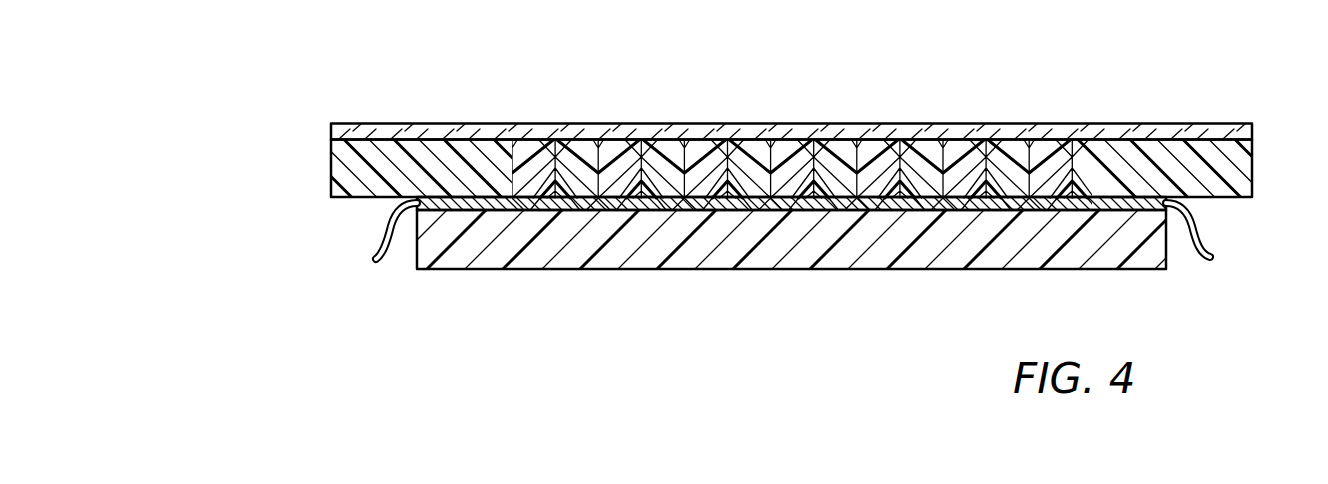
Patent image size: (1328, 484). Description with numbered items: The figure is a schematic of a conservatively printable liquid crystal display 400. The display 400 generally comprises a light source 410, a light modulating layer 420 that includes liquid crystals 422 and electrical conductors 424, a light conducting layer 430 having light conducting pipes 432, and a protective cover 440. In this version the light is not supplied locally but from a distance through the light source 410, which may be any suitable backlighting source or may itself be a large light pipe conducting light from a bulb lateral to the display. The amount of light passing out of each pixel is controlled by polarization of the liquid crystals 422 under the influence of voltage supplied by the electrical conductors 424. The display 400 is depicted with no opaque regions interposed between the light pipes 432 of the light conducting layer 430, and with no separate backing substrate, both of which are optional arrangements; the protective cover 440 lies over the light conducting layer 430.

The display 400 is at (1183, 52).
The light source 410 is at (934, 272).
The light modulating layer 420 is at (850, 257).
The liquid crystals 422 is at (622, 203).
The electrical conductors 424 is at (378, 238).
The light conducting layer 430 is at (781, 145).
The light conducting pipes 432 is at (1040, 146).
The protective cover 440 is at (484, 108).